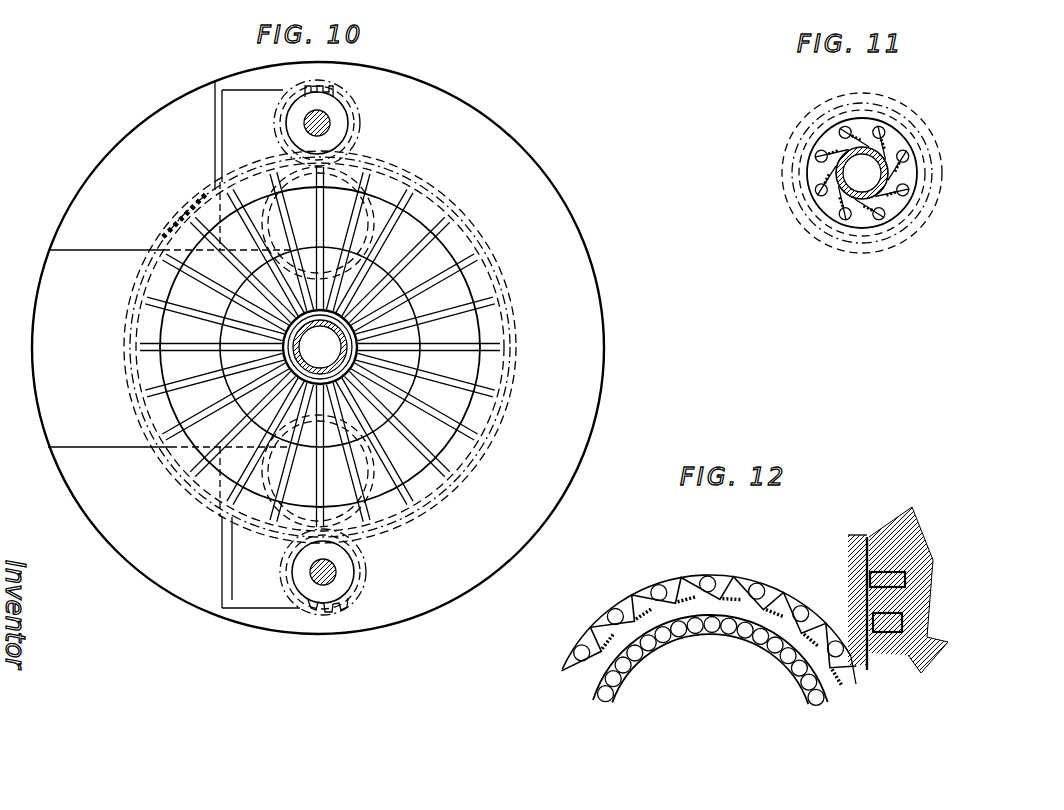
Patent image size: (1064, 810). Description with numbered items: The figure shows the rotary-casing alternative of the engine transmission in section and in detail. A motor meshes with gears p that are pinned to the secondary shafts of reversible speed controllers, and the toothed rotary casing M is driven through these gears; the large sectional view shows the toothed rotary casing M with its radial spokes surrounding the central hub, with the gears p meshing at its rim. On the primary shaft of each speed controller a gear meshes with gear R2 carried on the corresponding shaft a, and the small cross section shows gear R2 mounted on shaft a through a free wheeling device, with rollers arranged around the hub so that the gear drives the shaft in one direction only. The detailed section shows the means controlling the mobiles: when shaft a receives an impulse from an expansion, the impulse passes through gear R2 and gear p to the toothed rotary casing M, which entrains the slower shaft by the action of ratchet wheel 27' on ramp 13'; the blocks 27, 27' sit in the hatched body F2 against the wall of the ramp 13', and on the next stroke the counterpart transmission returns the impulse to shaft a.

In FIG. 10, the gear P is at (333, 113).
In FIG. 10, the shaft a is at (417, 240).
In FIG. 11, the shaft a is at (885, 152).
In FIG. 10, the toothed rotary casing M is at (470, 280).
In FIG. 11, the gear R2 is at (925, 167).
In FIG. 12, the block 27 is at (789, 645).
In FIG. 12, the ratchet wheel 27' is at (743, 565).
In FIG. 12, the frame body F2 is at (910, 548).
In FIG. 12, the ramp 13' is at (883, 628).